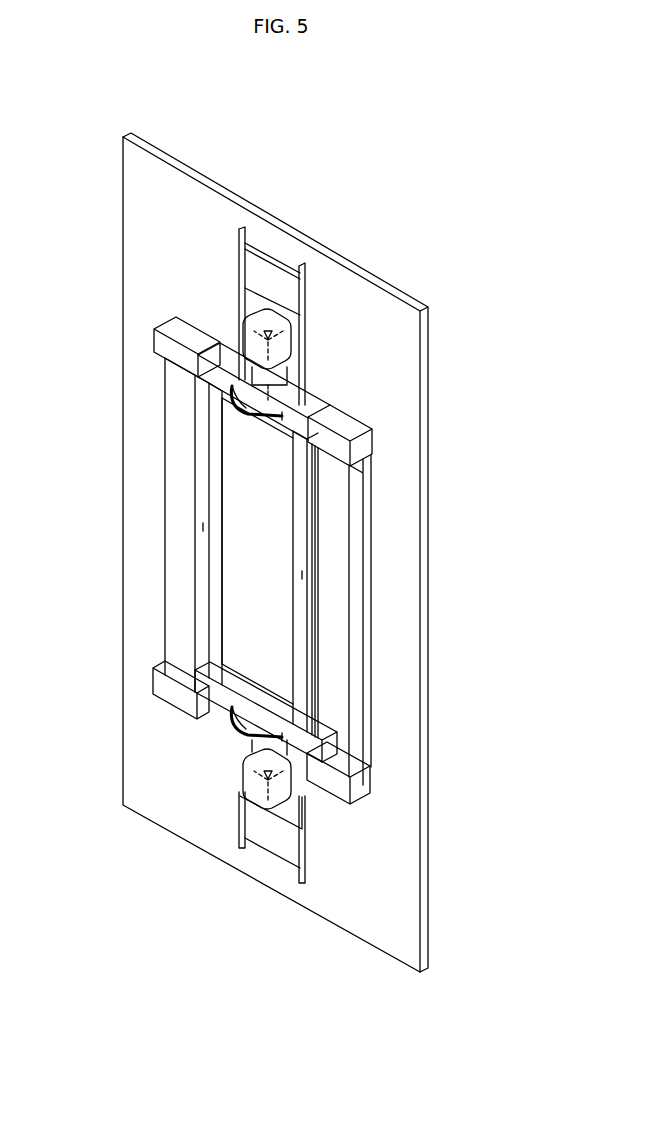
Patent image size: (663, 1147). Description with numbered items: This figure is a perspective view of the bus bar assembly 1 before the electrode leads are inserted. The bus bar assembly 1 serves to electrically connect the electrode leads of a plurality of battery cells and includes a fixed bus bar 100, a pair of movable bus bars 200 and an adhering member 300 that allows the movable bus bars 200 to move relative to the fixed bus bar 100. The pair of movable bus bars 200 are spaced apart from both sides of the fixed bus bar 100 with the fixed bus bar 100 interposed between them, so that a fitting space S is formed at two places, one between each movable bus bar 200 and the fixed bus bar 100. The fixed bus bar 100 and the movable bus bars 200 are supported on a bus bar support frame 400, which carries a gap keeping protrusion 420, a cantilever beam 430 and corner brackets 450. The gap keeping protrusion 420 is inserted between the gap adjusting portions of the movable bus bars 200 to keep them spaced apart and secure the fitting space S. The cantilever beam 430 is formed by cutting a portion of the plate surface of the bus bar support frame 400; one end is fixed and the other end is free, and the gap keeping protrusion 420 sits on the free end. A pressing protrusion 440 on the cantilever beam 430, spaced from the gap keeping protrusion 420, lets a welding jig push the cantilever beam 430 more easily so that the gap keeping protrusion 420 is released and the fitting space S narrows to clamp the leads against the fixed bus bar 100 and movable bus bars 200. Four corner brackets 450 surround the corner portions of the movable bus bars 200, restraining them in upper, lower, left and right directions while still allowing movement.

The bus bar assembly 1 is at (140, 96).
The fixed bus bar 100 is at (268, 489).
The movable bus bar 200 is at (178, 584).
The adhering member 300 is at (248, 405).
The bus bar support frame 400 is at (435, 544).
The gap keeping protrusion 420 is at (270, 390).
The cantilever beam 430 is at (256, 291).
The pressing protrusion 440 is at (262, 332).
The corner bracket 450 is at (170, 350).
The fitting space S is at (203, 527).